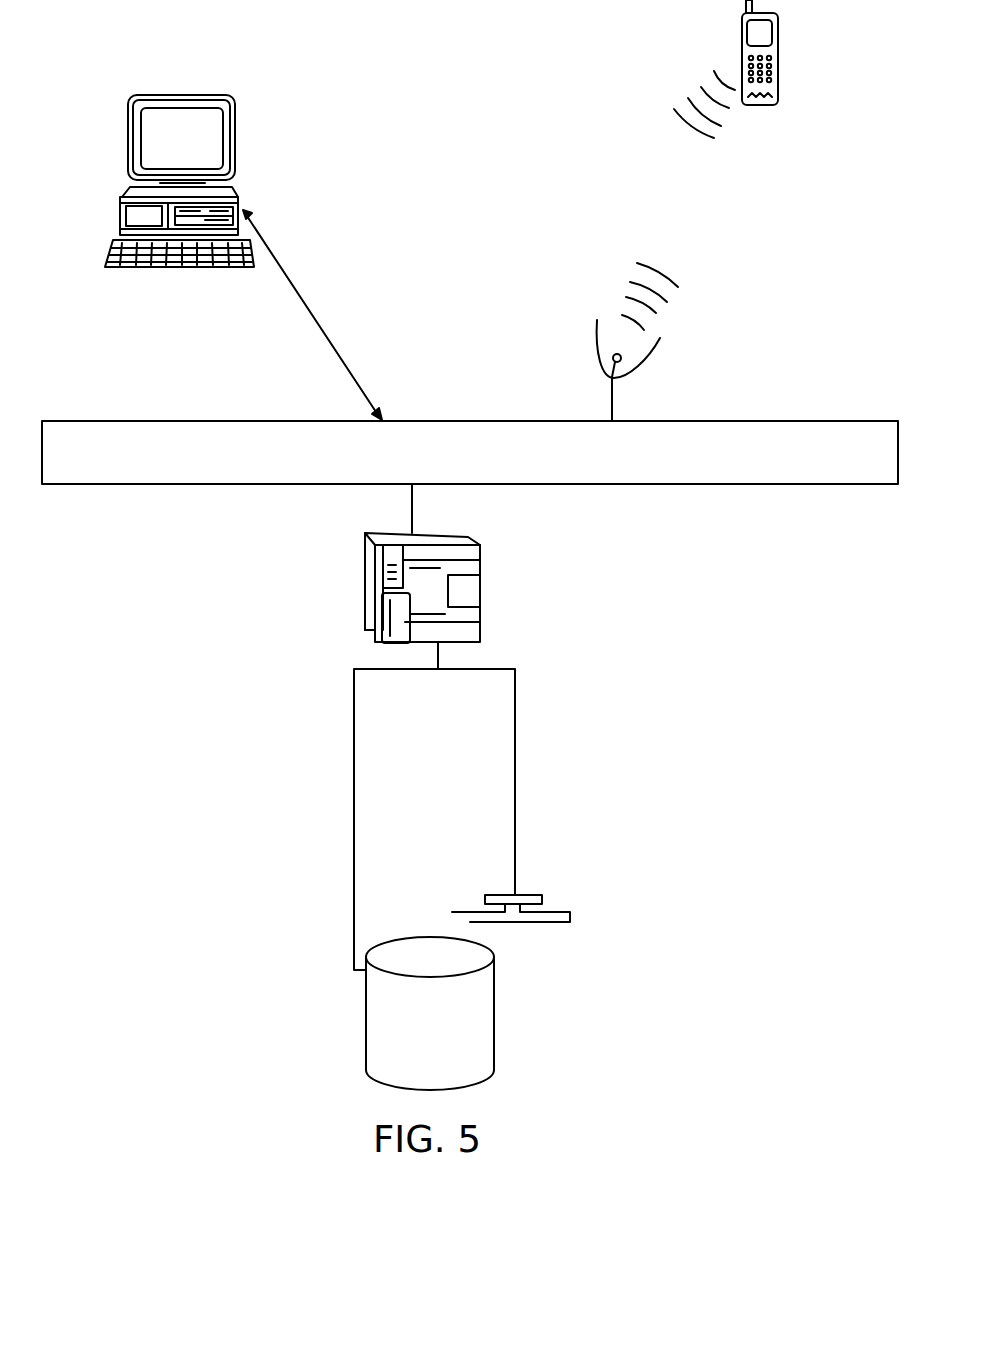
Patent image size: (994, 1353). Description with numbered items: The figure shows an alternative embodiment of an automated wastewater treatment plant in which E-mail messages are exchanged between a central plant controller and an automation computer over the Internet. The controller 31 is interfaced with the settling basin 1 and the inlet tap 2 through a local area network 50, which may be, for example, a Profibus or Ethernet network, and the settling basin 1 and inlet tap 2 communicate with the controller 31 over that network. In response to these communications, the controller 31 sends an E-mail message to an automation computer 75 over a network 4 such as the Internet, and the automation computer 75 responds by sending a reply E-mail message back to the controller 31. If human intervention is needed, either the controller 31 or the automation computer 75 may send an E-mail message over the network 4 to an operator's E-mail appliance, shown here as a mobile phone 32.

The settling basin 1 is at (350, 1040).
The inlet tap 2 is at (458, 906).
The network 4 is at (69, 469).
The controller 31 is at (366, 548).
The mobile phone 32 is at (790, 58).
The local area network 50 is at (523, 846).
The automation computer 75 is at (235, 140).